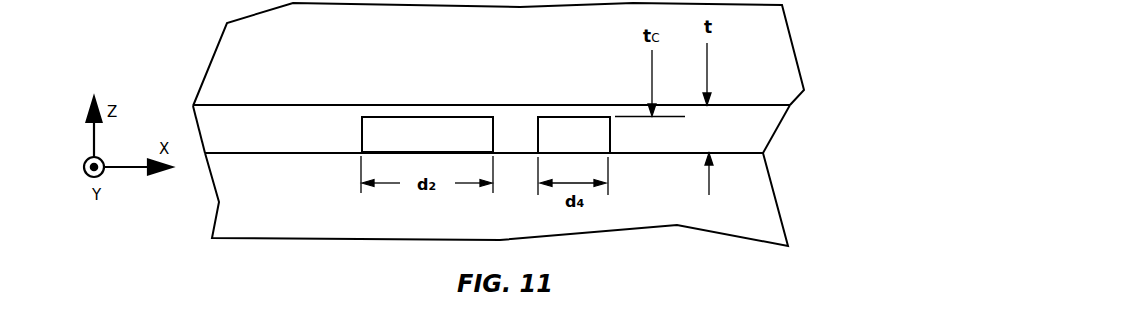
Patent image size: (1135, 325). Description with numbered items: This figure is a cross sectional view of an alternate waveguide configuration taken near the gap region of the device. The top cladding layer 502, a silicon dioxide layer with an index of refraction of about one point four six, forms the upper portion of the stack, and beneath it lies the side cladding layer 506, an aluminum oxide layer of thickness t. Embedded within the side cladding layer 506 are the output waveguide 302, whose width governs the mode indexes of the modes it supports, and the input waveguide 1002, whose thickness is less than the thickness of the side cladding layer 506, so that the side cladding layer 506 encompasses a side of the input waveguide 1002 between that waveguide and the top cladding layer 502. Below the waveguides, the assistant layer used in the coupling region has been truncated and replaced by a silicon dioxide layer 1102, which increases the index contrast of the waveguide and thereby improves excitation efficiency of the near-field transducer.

The top cladding layer 502 is at (772, 13).
The side cladding layer 506 is at (765, 133).
The SiO2 layer 1102 is at (765, 198).
The output waveguide 302 is at (410, 144).
The input waveguide 1002 is at (553, 144).